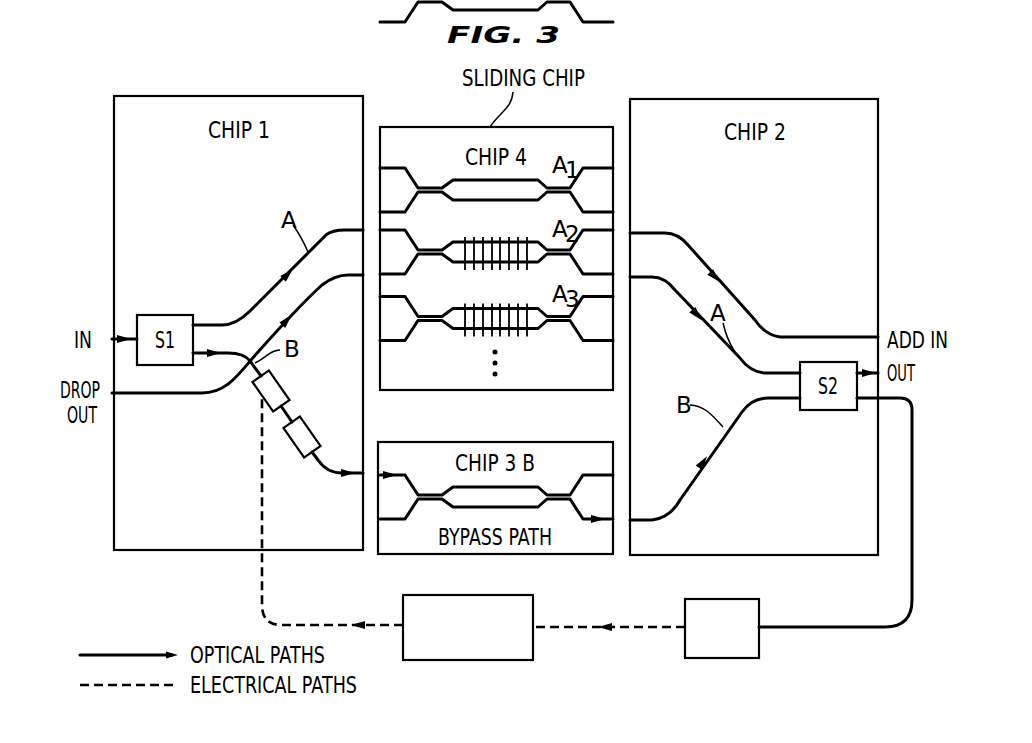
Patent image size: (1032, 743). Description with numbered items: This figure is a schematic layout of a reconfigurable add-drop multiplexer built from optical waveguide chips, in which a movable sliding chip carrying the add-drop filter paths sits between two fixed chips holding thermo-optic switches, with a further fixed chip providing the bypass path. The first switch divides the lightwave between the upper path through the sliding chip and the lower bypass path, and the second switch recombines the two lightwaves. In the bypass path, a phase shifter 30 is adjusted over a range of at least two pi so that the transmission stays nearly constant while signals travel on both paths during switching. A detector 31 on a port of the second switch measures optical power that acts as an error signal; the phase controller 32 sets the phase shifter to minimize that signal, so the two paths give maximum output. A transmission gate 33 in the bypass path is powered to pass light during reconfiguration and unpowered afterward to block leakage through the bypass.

The phase shifter 30 is at (257, 393).
The detector 31 is at (759, 613).
The phase controller 32 is at (533, 610).
The transmission gate 33 is at (315, 425).